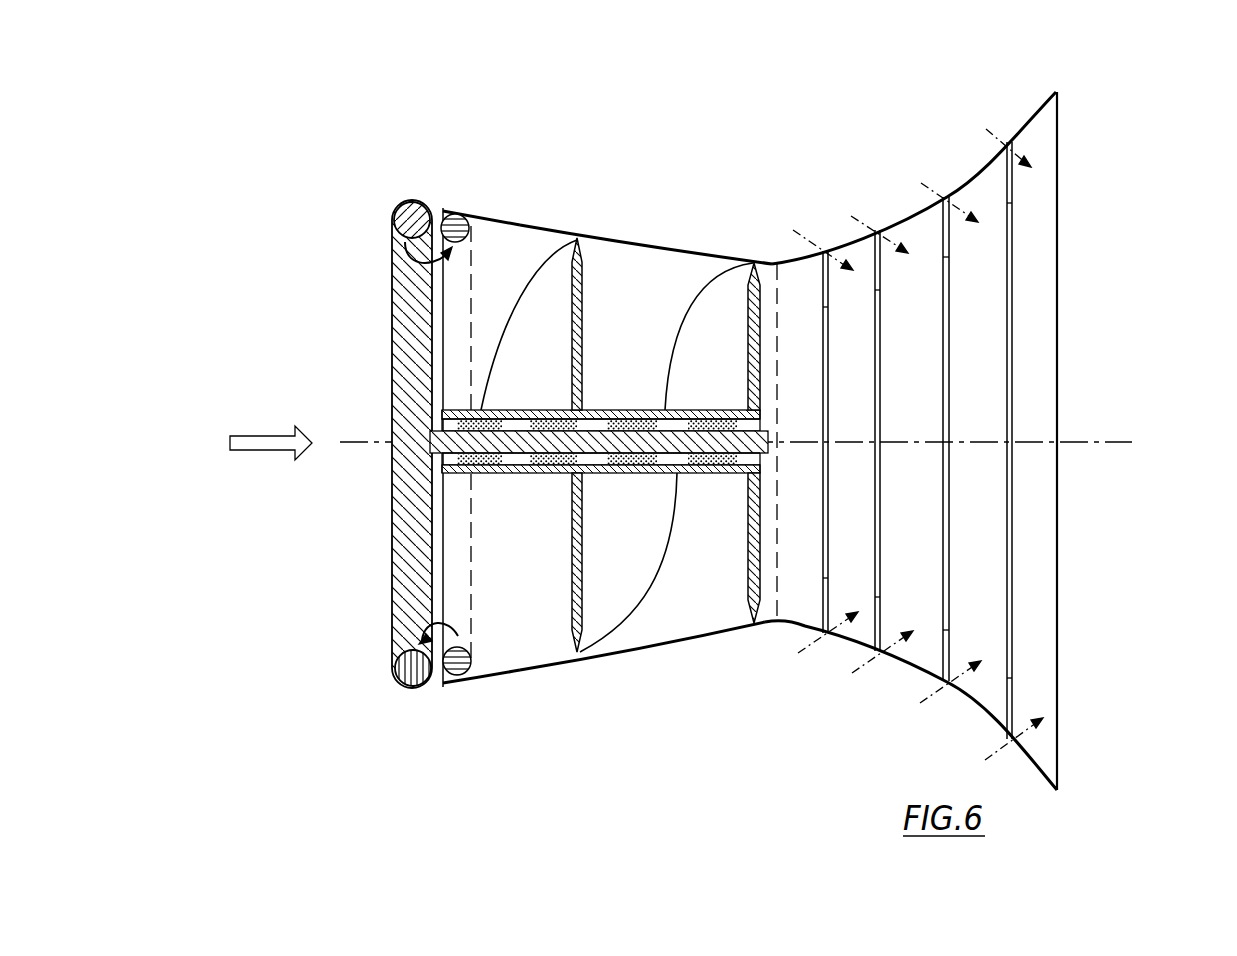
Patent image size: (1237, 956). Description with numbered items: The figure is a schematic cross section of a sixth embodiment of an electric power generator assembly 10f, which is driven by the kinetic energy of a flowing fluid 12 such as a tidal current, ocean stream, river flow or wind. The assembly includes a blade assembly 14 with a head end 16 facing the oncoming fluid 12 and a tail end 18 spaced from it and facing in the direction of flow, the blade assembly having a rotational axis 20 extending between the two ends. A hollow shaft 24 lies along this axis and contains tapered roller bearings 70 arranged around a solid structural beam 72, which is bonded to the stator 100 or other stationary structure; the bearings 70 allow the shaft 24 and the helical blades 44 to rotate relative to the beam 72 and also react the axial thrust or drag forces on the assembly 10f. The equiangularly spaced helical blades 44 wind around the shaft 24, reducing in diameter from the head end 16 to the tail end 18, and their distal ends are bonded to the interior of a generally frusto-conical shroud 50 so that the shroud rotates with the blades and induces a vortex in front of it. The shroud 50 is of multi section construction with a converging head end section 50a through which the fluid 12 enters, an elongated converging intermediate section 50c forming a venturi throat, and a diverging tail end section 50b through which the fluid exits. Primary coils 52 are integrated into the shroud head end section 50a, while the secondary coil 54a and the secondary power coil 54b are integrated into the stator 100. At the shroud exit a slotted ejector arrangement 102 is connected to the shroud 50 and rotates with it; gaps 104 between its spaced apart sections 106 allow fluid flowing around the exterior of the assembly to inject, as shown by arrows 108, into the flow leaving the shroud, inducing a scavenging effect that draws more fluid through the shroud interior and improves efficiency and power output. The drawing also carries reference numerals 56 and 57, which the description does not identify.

The electric power generator assembly 10f is at (638, 224).
The flowing fluid 12 is at (258, 457).
The blade assembly 14 is at (748, 441).
The head end 16 is at (470, 316).
The tail end 18 is at (724, 519).
The rotational axis 20 is at (362, 443).
The shaft 24 is at (521, 410).
The helical blades 44 is at (548, 278).
The shroud 50 is at (748, 441).
The head end section 50a is at (490, 695).
The tail end section 50b is at (831, 699).
The intermediate section 50c is at (775, 697).
The primary coils 52 is at (452, 214).
The secondary coil 54a is at (403, 203).
The secondary power coil 54b is at (404, 682).
The rotation arrow 56 is at (400, 287).
The rotation arrow 57 is at (452, 627).
The tapered roller bearings 70 is at (632, 410).
The solid structural beam 72 is at (675, 425).
The stator 100 is at (393, 350).
The slotted ejector arrangement 102 is at (1064, 198).
The gaps 104 is at (875, 565).
The spaced apart sections 106 is at (871, 381).
The arrows 108 is at (993, 138).